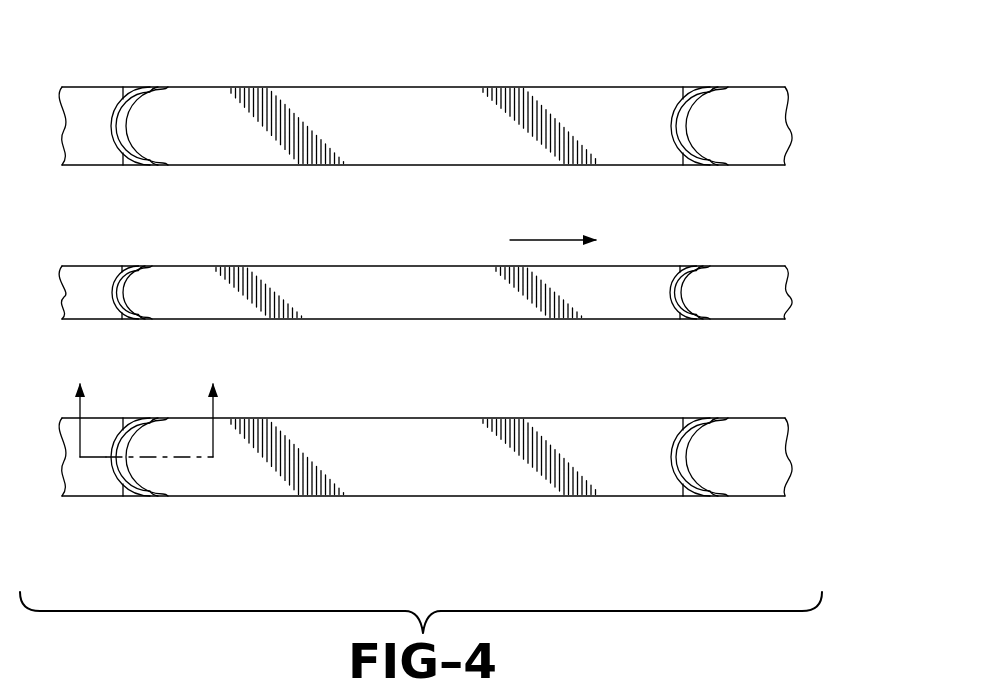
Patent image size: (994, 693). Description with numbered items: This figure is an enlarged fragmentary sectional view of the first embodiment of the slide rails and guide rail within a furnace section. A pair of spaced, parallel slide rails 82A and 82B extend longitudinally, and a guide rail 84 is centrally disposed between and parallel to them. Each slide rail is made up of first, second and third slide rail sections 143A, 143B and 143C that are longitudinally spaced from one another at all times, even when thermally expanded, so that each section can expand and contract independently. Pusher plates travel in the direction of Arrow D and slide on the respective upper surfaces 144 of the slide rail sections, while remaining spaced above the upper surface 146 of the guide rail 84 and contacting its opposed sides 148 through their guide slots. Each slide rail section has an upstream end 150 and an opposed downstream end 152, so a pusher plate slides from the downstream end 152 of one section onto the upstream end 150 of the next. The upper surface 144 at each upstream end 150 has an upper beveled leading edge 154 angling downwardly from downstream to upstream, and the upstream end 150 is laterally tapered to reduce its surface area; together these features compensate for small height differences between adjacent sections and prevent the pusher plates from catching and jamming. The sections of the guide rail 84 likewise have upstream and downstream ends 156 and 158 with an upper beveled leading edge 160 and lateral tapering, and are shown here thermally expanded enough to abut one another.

The slide rail 82A is at (411, 86).
The slide rail 82B is at (471, 416).
The guide rail 84 is at (413, 262).
The first slide rail section 143A is at (77, 86).
The second slide rail section 143B is at (332, 86).
The third slide rail section 143C is at (776, 86).
The upper surface 144 is at (83, 148).
The upper surface 146 is at (350, 302).
The opposed sides 148 is at (343, 266).
The upstream end 150 is at (671, 115).
The downstream end 152 is at (130, 87).
The upper beveled leading edge 154 is at (128, 126).
The upstream end 156 is at (672, 283).
The downstream end 158 is at (129, 265).
The upper beveled leading edge 160 is at (126, 292).